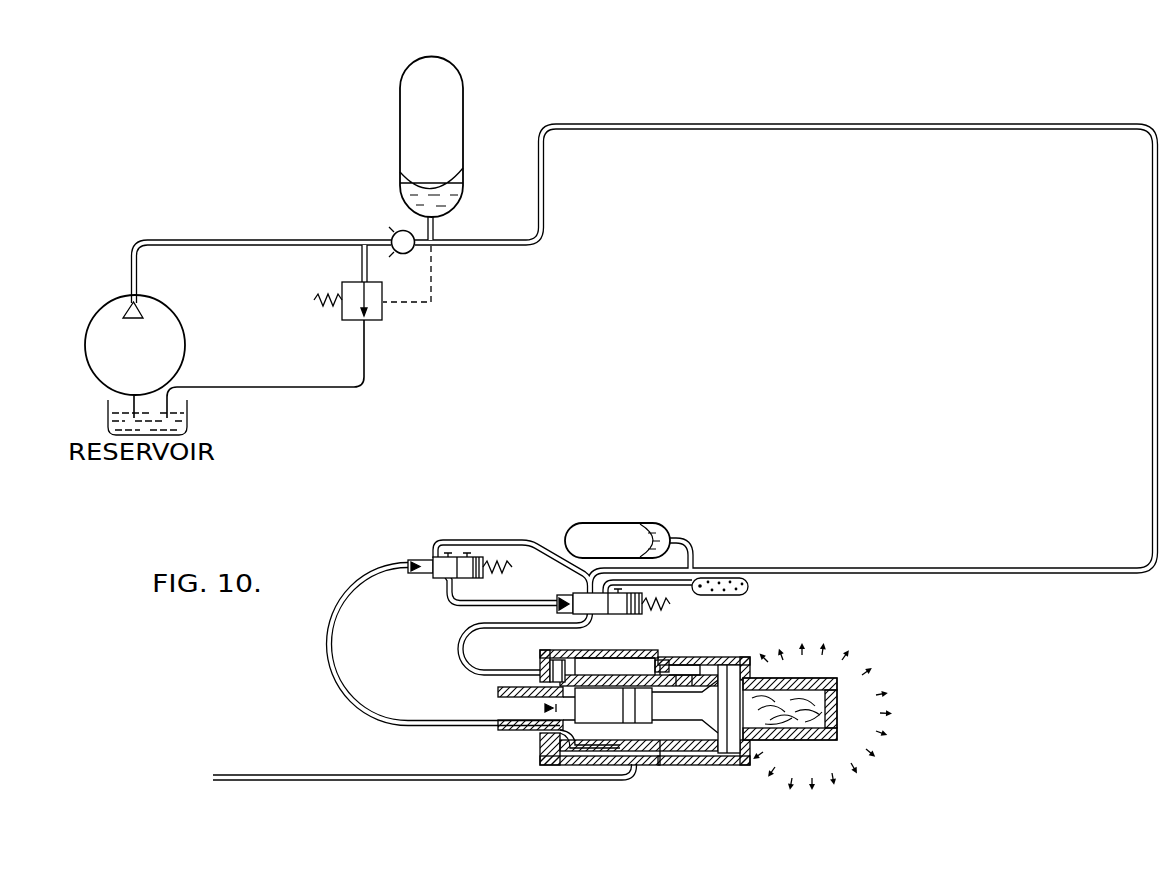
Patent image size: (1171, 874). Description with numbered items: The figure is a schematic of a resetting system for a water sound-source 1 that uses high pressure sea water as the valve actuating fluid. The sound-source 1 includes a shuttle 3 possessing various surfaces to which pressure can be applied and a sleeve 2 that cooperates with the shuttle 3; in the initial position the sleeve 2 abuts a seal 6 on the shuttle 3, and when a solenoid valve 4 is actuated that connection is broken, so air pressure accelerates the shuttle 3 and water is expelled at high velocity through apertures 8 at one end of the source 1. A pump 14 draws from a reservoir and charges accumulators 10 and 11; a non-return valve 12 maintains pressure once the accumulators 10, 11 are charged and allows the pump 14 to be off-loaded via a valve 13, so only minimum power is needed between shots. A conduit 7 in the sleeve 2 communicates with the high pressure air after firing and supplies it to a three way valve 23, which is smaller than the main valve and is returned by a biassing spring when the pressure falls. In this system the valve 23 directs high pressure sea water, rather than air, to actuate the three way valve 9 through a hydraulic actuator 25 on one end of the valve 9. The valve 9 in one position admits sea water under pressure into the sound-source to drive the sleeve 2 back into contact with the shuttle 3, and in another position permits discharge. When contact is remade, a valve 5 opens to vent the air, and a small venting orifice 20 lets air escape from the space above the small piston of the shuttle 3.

The water sound-source 1 is at (719, 665).
The sleeve 2 is at (585, 652).
The shuttle 3 is at (740, 752).
The solenoid valve 4 is at (540, 710).
The valve 5 is at (663, 668).
The seal 6 is at (688, 688).
The conduit 7 is at (650, 763).
The apertures 8 is at (820, 692).
The three way valve 9 is at (594, 610).
The accumulator 10 is at (660, 526).
The accumulator 11 is at (427, 200).
The non-return valve 12 is at (392, 233).
The valve 13 is at (378, 318).
The pump 14 is at (111, 312).
The venting orifice 20 is at (540, 660).
The three way valve 23 is at (436, 572).
The hydraulic actuator 25 is at (567, 615).